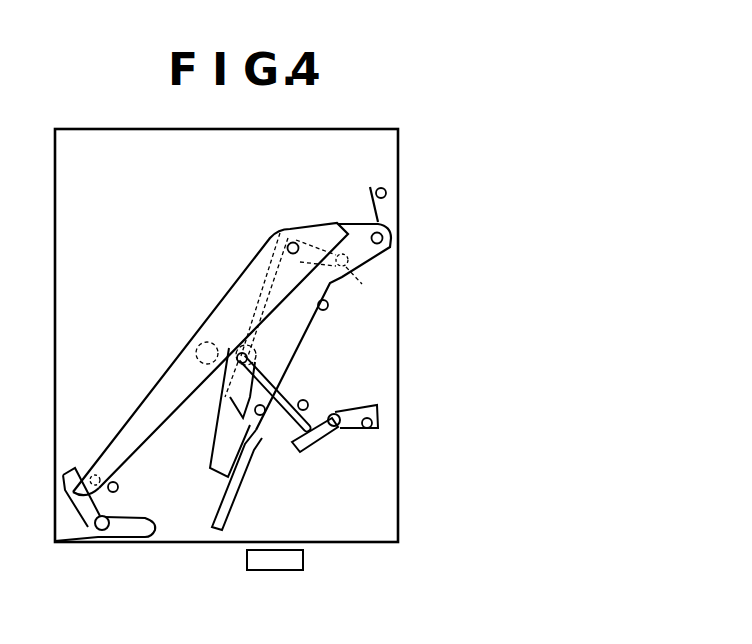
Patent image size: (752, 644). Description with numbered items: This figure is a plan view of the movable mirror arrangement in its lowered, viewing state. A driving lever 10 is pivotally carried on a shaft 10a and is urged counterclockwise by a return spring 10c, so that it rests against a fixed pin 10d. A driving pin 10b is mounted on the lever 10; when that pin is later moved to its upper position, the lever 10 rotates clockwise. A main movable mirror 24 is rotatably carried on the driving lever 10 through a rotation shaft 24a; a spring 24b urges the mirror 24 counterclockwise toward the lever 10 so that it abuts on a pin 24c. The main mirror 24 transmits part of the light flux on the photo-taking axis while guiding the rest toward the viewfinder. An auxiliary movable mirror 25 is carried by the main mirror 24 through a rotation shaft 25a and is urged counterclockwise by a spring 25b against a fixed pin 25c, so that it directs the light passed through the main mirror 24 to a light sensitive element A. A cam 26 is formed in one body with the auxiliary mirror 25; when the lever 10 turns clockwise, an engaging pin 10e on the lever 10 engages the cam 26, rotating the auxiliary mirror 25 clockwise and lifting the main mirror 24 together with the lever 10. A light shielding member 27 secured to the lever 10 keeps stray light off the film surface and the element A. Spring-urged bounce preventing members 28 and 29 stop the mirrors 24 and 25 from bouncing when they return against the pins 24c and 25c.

The driving lever 10 is at (364, 222).
The shaft 10a is at (383, 238).
The driving pin 10b is at (369, 282).
The return spring 10c is at (372, 185).
The fixed pin 10d is at (327, 308).
The engaging pin 10e is at (258, 416).
The main movable mirror 24 is at (258, 282).
The rotation shaft 24a is at (291, 243).
The spring 24b is at (312, 238).
The pin 24c is at (118, 487).
The auxiliary movable mirror 25 is at (297, 393).
The rotation shaft 25a is at (253, 352).
The spring 25b is at (205, 344).
The fixed pin 25c is at (304, 399).
The cam 26 is at (240, 397).
The light shielding member 27 is at (223, 532).
The bounce preventing member 28 is at (128, 528).
The bounce preventing member 29 is at (378, 407).
The light sensitive element A is at (295, 560).